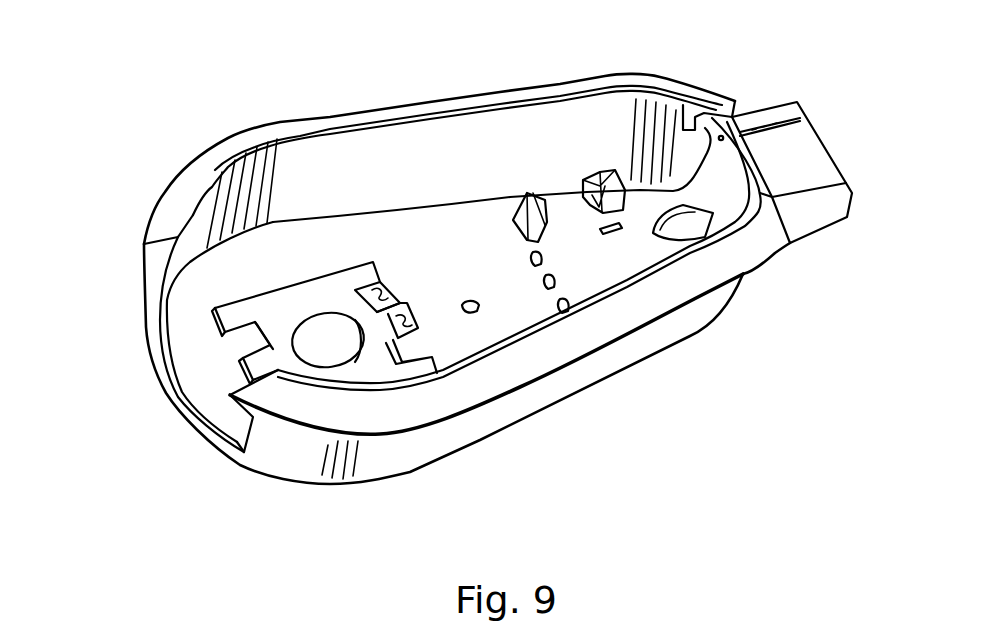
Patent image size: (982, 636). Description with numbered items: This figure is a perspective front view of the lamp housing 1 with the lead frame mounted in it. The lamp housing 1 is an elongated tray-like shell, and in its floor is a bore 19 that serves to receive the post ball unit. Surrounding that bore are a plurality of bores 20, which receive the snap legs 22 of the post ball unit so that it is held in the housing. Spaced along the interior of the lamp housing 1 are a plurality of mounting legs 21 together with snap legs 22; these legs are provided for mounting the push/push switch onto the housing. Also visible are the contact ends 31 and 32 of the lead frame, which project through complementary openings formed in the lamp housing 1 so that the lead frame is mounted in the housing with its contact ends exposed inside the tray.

The lamp housing 1 is at (643, 343).
The bore 19 is at (322, 338).
The bores 20 is at (365, 290).
The mounting legs 21 is at (520, 212).
The snap legs 22 is at (610, 167).
The contact end 31 is at (378, 306).
The contact end 32 is at (535, 282).